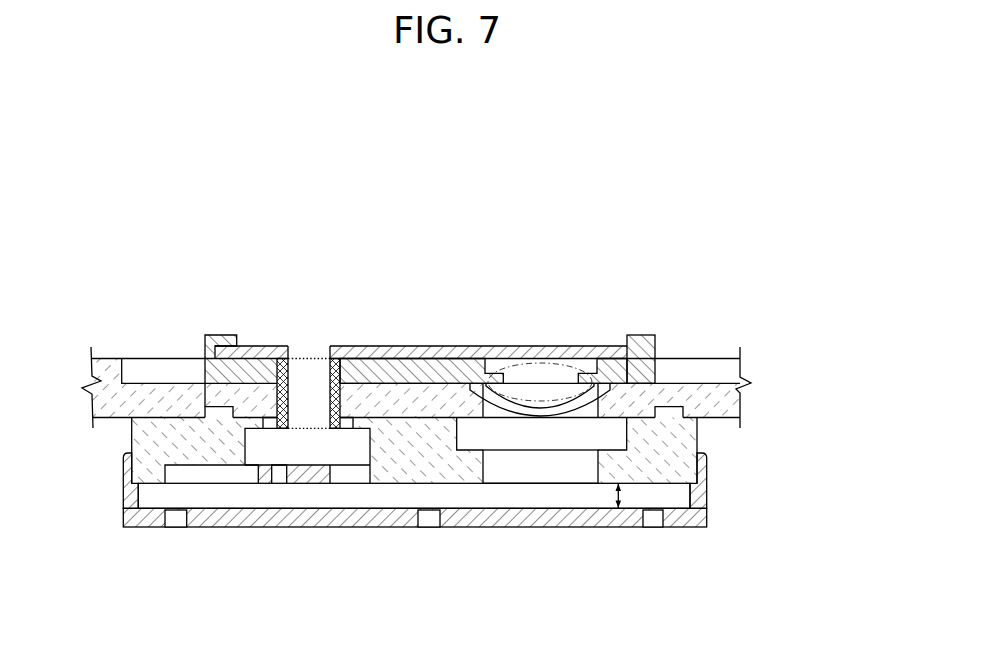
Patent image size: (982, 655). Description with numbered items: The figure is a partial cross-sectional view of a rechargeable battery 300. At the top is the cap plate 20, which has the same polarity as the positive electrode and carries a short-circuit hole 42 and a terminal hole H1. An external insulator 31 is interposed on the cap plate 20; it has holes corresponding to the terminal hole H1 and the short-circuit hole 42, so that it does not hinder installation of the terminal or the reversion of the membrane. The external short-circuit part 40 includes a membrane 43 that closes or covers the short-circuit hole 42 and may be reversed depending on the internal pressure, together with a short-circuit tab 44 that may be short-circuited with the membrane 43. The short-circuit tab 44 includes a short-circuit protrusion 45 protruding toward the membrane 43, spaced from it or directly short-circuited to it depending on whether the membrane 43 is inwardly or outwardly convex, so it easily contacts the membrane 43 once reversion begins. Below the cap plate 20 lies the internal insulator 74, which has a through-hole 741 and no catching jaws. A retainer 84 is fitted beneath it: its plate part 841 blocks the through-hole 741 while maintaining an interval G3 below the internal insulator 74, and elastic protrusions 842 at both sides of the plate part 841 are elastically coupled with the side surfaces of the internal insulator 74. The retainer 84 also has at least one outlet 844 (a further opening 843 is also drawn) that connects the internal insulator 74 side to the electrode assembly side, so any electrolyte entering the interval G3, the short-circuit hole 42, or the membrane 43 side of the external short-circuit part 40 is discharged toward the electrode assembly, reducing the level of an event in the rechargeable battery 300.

The rechargeable battery 300 is at (402, 193).
The cap plate 20 is at (703, 398).
The external insulator 31 is at (215, 335).
The terminal hole H1 is at (311, 368).
The external short-circuit part 40 is at (435, 332).
The short-circuit tab 44 is at (388, 355).
The membrane 43 is at (531, 400).
The short-circuit hole 42 is at (574, 410).
The short-circuit protrusion 45 is at (588, 365).
The retainer 84 is at (464, 524).
The plate part 841 is at (297, 517).
The elastic protrusions 842 is at (704, 462).
The opening 843 is at (178, 530).
The outlet 844 is at (425, 527).
The internal insulator 74 is at (396, 524).
The through-hole 741 is at (544, 467).
The interval G3 is at (617, 498).